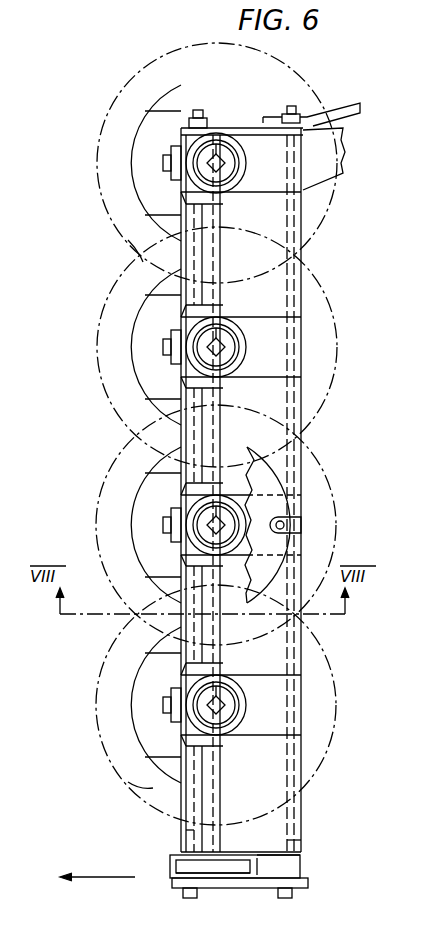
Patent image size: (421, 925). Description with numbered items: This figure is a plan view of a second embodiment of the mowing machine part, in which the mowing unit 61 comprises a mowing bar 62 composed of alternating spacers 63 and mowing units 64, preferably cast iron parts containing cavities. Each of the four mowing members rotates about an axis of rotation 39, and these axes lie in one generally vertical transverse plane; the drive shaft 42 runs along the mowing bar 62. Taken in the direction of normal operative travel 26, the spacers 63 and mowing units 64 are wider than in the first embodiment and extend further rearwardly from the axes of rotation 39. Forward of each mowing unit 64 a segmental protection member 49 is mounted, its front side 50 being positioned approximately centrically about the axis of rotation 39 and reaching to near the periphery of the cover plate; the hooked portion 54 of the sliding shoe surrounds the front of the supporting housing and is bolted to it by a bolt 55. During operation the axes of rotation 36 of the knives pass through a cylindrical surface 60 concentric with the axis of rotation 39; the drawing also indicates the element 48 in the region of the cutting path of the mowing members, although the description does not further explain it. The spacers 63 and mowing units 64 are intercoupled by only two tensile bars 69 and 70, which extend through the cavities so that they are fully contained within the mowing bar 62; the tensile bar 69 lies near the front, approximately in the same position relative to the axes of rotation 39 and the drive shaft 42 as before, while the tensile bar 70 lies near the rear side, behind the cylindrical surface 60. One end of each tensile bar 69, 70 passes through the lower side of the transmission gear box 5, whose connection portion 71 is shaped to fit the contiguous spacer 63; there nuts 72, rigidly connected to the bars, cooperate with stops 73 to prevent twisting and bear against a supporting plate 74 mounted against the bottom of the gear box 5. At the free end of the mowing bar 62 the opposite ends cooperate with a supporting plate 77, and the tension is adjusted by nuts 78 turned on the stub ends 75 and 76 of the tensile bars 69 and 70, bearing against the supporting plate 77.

The transmission gear box 5 is at (170, 866).
The direction of normal operative travel 26 is at (108, 878).
The axes of rotation of the knives 36 is at (283, 528).
The axis of rotation of the mowing member 39 is at (223, 343).
The drive shaft 42 is at (217, 784).
The cutting circle 48 is at (96, 190).
The segmental protection member 49 is at (140, 140).
The front side of the protection member 50 is at (132, 246).
The hooked portion 54 is at (172, 696).
The bolt 55 is at (172, 530).
The cylindrical surface 60 is at (253, 458).
The mowing unit 61 is at (92, 782).
The mowing bar 62 is at (176, 804).
The spacers 63 is at (303, 278).
The mowing units 64 is at (303, 188).
The tensile bar 69 is at (192, 830).
The tensile bar 70 is at (288, 838).
The connection portion 71 is at (262, 855).
The nuts 72 is at (195, 893).
The stops 73 is at (190, 892).
The supporting plate 74 is at (262, 892).
The stub end 75 is at (198, 110).
The stub end 76 is at (288, 108).
The supporting plate 77 is at (235, 128).
The nuts 78 is at (305, 117).